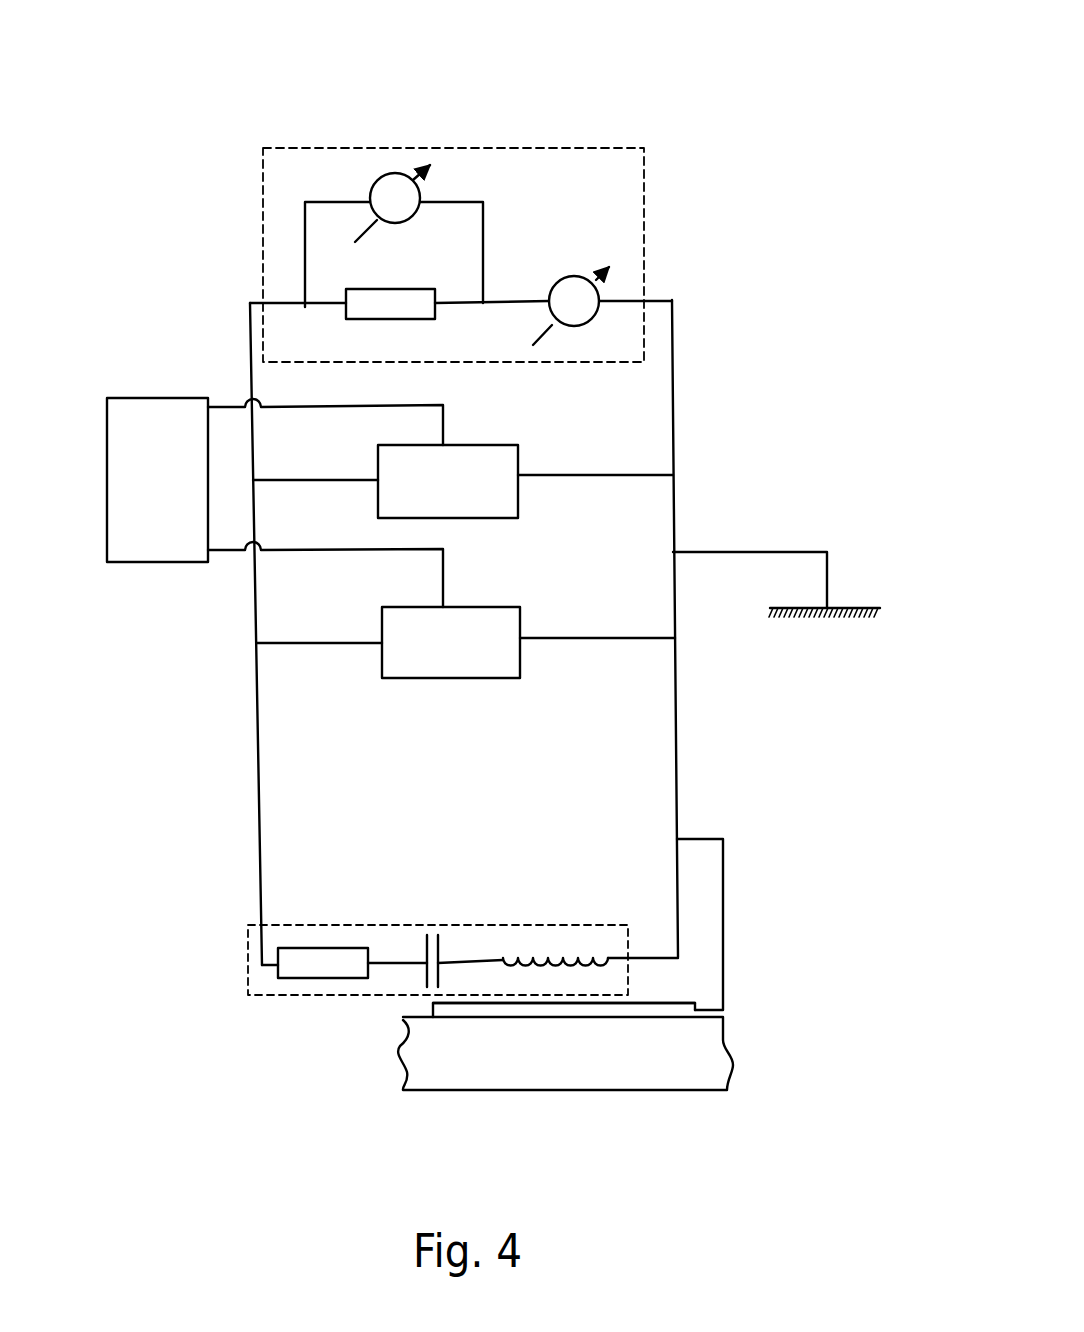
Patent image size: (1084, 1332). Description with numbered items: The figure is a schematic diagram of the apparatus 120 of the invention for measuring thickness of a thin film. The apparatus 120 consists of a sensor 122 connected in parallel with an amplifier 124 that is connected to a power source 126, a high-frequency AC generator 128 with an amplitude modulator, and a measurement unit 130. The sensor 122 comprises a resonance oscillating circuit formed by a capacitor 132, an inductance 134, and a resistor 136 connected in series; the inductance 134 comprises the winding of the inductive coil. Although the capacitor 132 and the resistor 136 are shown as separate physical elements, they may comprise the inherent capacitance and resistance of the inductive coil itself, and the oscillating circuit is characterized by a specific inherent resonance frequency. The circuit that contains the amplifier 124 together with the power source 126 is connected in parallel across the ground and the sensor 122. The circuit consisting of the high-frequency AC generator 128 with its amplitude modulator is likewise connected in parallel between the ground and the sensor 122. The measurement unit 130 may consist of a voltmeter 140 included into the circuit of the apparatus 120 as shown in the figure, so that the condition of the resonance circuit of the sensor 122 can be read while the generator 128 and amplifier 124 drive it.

The apparatus 120 is at (742, 272).
The sensor 122 is at (607, 902).
The amplifier 124 is at (418, 688).
The power source 126 is at (160, 568).
The high-frequency AC generator 128 is at (520, 450).
The measurement unit 130 is at (602, 123).
The capacitor 132 is at (415, 980).
The inductance 134 is at (588, 950).
The resistor 136 is at (300, 982).
The voltmeter 140 is at (372, 177).